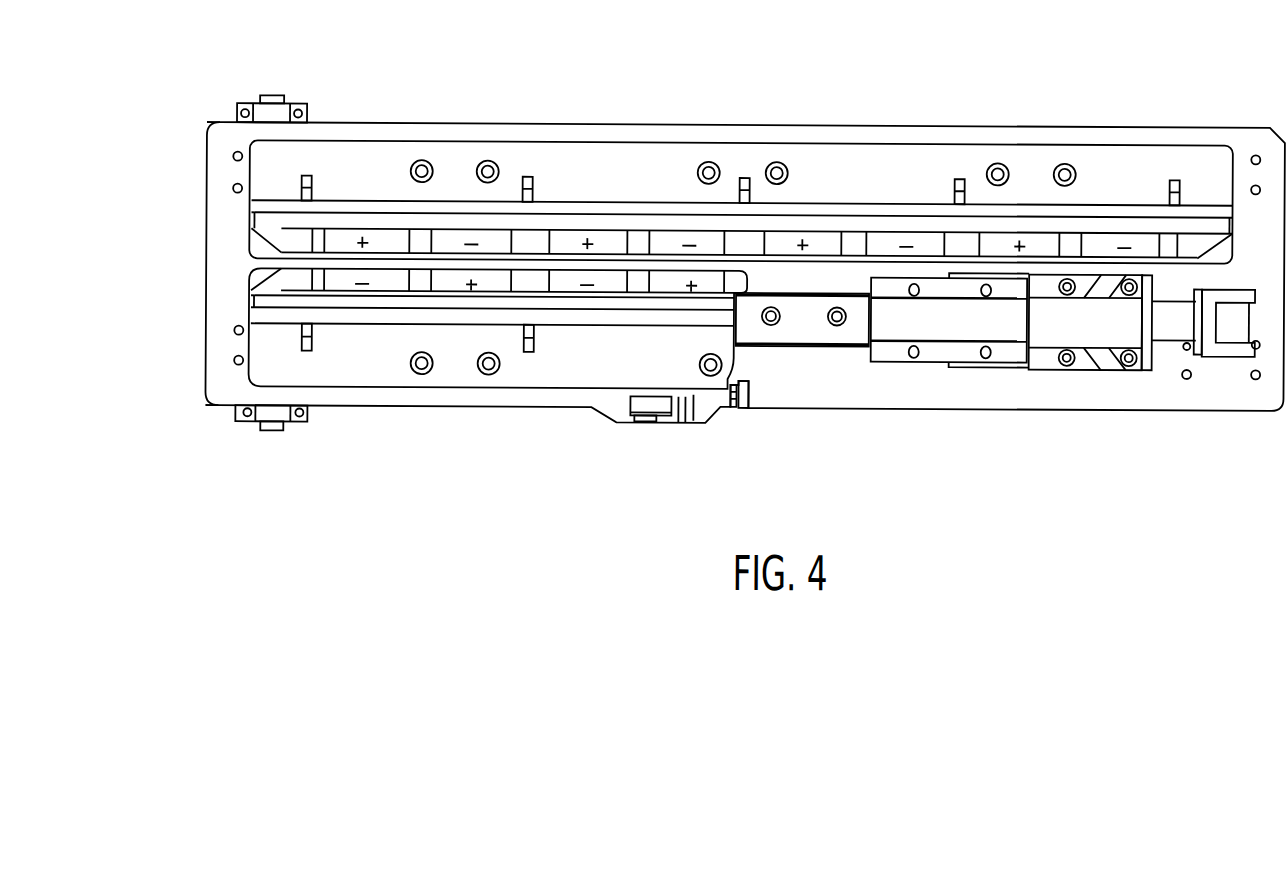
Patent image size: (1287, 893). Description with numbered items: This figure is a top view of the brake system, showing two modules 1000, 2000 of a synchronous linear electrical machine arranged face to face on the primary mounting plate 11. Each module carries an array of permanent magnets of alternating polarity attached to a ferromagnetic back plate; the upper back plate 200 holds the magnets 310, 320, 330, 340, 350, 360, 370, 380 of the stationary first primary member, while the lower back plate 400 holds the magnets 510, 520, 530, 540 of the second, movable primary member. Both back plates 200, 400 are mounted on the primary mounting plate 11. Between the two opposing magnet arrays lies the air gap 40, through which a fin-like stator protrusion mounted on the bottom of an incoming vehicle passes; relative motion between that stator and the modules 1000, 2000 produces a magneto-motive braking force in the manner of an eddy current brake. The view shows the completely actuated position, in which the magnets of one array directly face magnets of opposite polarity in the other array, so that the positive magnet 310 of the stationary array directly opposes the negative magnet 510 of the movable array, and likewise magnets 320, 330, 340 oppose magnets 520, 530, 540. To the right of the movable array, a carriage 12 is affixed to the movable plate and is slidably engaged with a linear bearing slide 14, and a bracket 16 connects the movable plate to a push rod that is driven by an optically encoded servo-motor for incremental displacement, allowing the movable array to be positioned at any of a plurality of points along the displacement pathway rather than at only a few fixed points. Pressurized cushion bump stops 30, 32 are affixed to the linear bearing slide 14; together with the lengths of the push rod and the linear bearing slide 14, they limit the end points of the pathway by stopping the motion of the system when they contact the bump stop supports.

The primary mounting plate 11 is at (1257, 134).
The carriage 12 is at (913, 358).
The linear bearing slide 14 is at (820, 345).
The bracket 16 is at (1087, 365).
The cushion bump stop 30 is at (653, 419).
The cushion bump stop 32 is at (1220, 352).
The air gap 40 is at (258, 261).
The back plate 200 is at (275, 217).
The back plate 400 is at (264, 303).
The permanent magnet 310 is at (365, 240).
The permanent magnet 320 is at (472, 241).
The permanent magnet 330 is at (588, 240).
The permanent magnet 340 is at (690, 241).
The permanent magnet 350 is at (803, 240).
The permanent magnet 360 is at (907, 241).
The permanent magnet 370 is at (1020, 240).
The permanent magnet 380 is at (1125, 241).
The permanent magnet 510 is at (363, 285).
The permanent magnet 520 is at (472, 287).
The permanent magnet 530 is at (587, 288).
The permanent magnet 540 is at (692, 287).
The module 1000 is at (337, 406).
The module 2000 is at (219, 119).